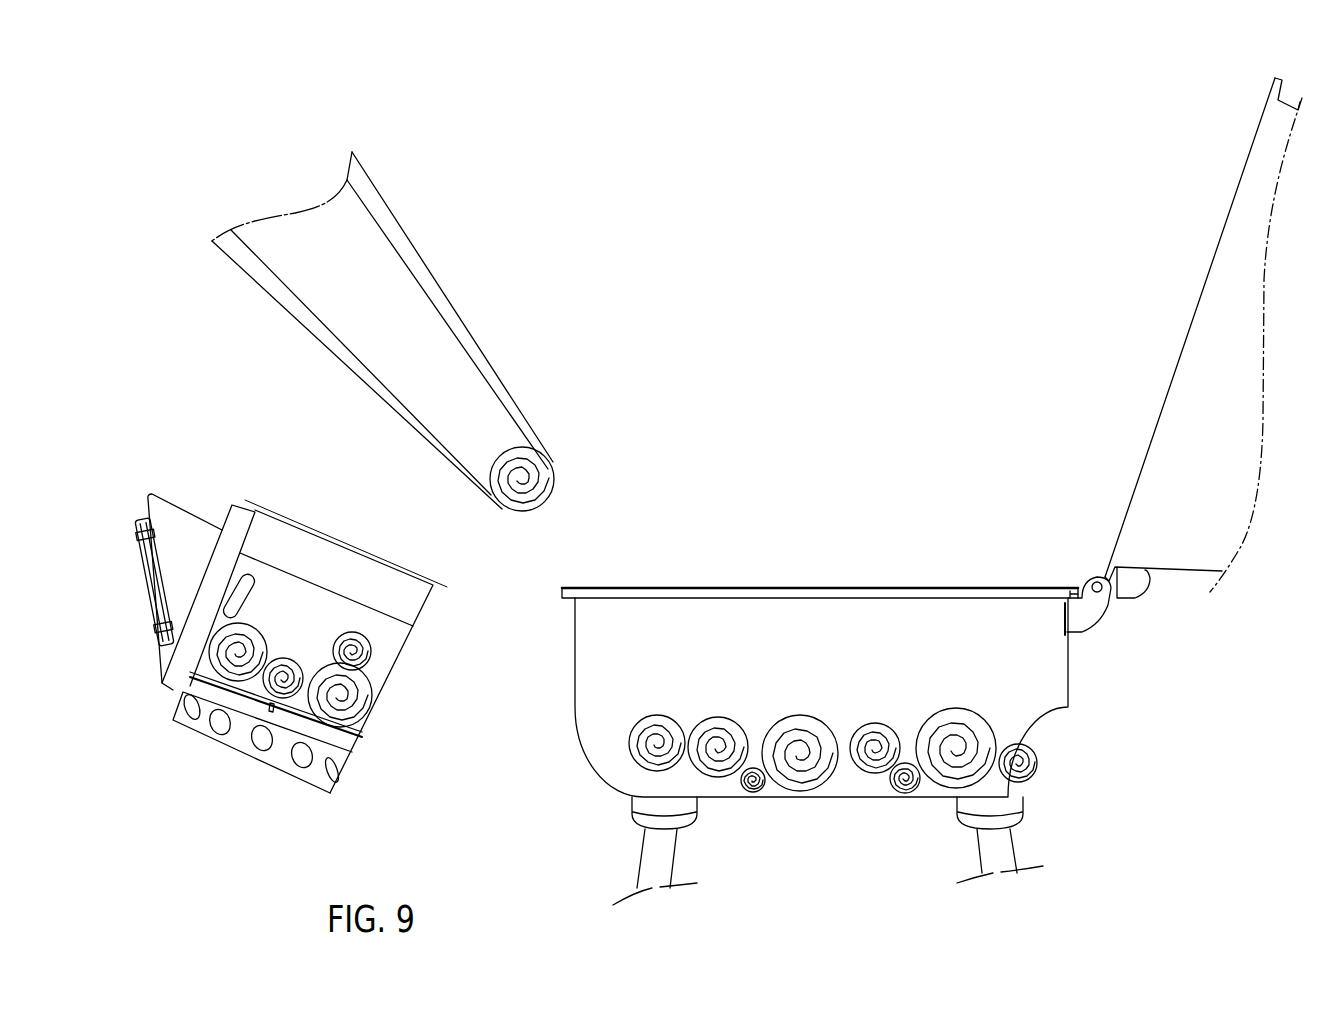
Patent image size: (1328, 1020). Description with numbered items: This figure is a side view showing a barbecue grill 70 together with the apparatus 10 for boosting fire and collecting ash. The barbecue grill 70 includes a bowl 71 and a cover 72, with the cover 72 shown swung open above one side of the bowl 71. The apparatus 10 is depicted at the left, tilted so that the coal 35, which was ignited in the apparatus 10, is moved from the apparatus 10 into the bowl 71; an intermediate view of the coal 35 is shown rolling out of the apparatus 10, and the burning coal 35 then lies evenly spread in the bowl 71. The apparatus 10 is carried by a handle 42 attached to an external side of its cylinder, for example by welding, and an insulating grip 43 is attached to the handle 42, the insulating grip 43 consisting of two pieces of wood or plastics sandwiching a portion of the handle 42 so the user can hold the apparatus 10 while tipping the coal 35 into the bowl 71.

The apparatus 10 is at (418, 640).
The coal 35 is at (533, 488).
The handle 42 is at (172, 497).
The insulating grip 43 is at (147, 576).
The barbecue grill 70 is at (932, 491).
The bowl 71 is at (1007, 622).
The cover 72 is at (1161, 484).